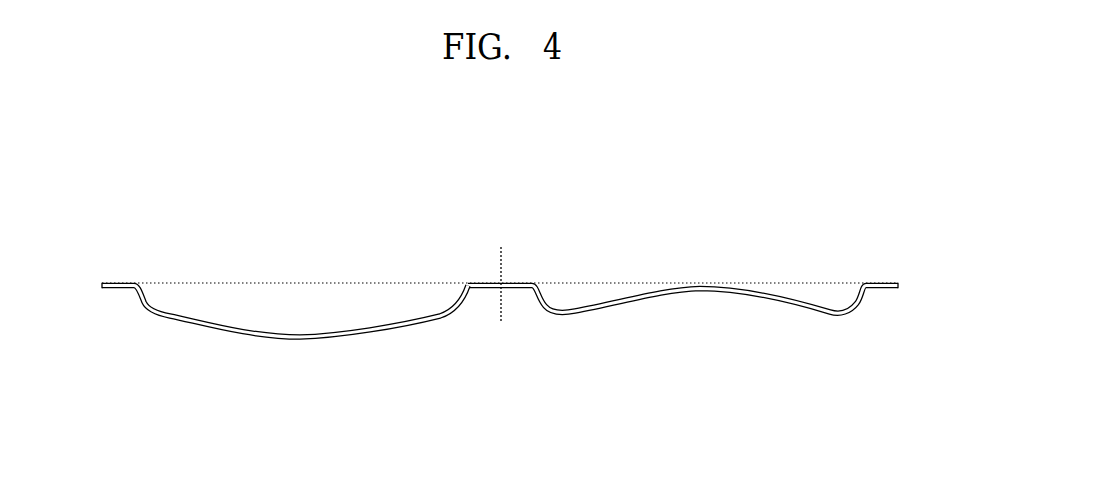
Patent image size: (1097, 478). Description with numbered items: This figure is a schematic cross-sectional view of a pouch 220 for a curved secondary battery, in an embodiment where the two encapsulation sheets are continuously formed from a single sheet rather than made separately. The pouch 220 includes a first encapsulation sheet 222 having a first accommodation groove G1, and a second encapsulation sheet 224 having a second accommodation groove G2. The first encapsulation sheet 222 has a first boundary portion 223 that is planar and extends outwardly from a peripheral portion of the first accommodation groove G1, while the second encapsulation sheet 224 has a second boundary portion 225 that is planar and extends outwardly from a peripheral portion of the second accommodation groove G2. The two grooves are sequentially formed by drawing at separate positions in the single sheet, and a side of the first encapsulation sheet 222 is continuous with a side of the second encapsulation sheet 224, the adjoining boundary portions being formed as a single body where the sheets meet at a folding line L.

The pouch 220 is at (499, 263).
The first encapsulation sheet 222 is at (735, 294).
The first boundary portion 223 is at (884, 282).
The second encapsulation sheet 224 is at (300, 339).
The second boundary portion 225 is at (121, 282).
The first accommodation groove G1 is at (832, 297).
The second accommodation groove G2 is at (312, 310).
The folding line L is at (500, 299).